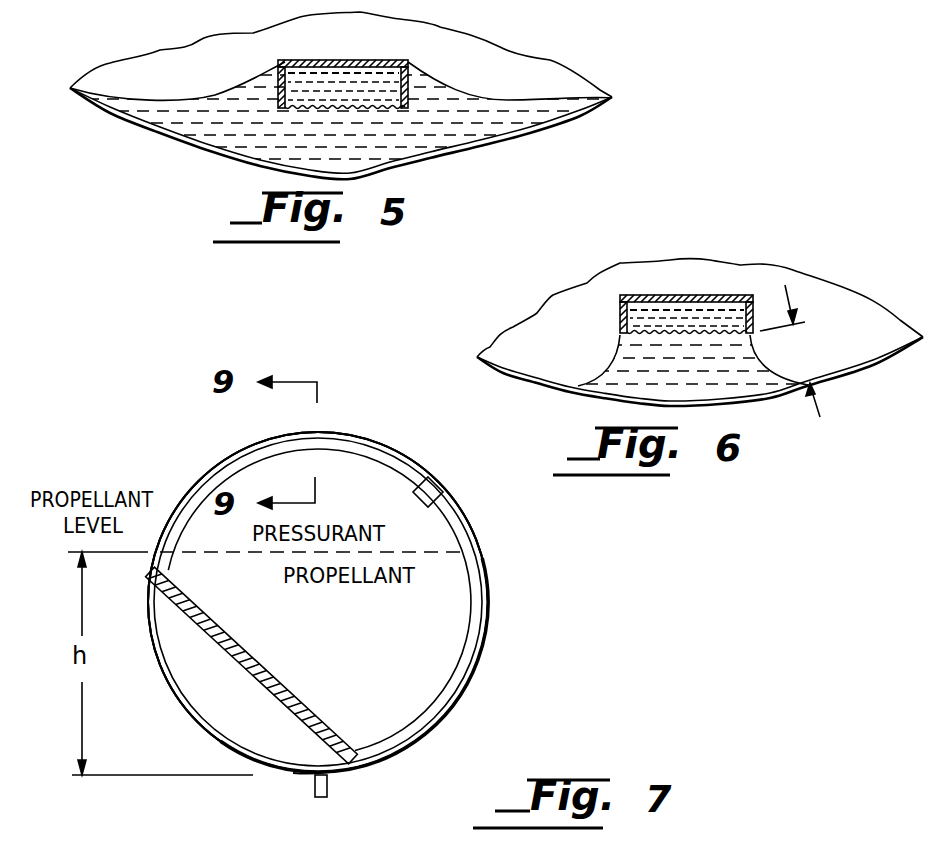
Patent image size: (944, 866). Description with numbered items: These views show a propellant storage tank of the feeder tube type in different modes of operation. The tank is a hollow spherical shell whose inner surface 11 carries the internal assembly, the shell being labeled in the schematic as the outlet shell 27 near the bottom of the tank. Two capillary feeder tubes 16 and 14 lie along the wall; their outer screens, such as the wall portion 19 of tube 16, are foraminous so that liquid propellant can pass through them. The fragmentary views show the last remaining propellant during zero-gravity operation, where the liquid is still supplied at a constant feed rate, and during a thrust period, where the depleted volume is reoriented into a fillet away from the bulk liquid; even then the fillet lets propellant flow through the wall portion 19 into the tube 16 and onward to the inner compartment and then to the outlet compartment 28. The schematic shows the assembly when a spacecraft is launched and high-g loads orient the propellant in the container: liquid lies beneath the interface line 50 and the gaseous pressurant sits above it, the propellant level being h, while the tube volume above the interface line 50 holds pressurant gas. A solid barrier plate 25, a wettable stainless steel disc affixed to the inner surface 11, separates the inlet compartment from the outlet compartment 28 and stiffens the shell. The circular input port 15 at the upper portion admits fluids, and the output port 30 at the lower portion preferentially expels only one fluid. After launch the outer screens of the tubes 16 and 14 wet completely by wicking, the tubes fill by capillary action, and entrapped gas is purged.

In FIG. 5, the inner surface 11 is at (510, 133).
In FIG. 6, the inner surface 11 is at (895, 347).
In FIG. 5, the feeder tube 16 is at (395, 60).
In FIG. 6, the feeder tube 16 is at (697, 293).
In FIG. 7, the feeder tube 16 is at (452, 687).
In FIG. 5, the wall portion 19 is at (313, 110).
In FIG. 6, the wall portion 19 is at (680, 333).
In FIG. 7, the wall portion 19 is at (485, 580).
In FIG. 7, the feeder tube 14 is at (252, 457).
In FIG. 7, the input port 15 is at (430, 473).
In FIG. 7, the interface line 50 is at (422, 550).
In FIG. 7, the barrier plate 25 is at (227, 622).
In FIG. 7, the outlet shell 27 is at (253, 760).
In FIG. 7, the outlet compartment 28 is at (293, 773).
In FIG. 7, the output port 30 is at (327, 797).